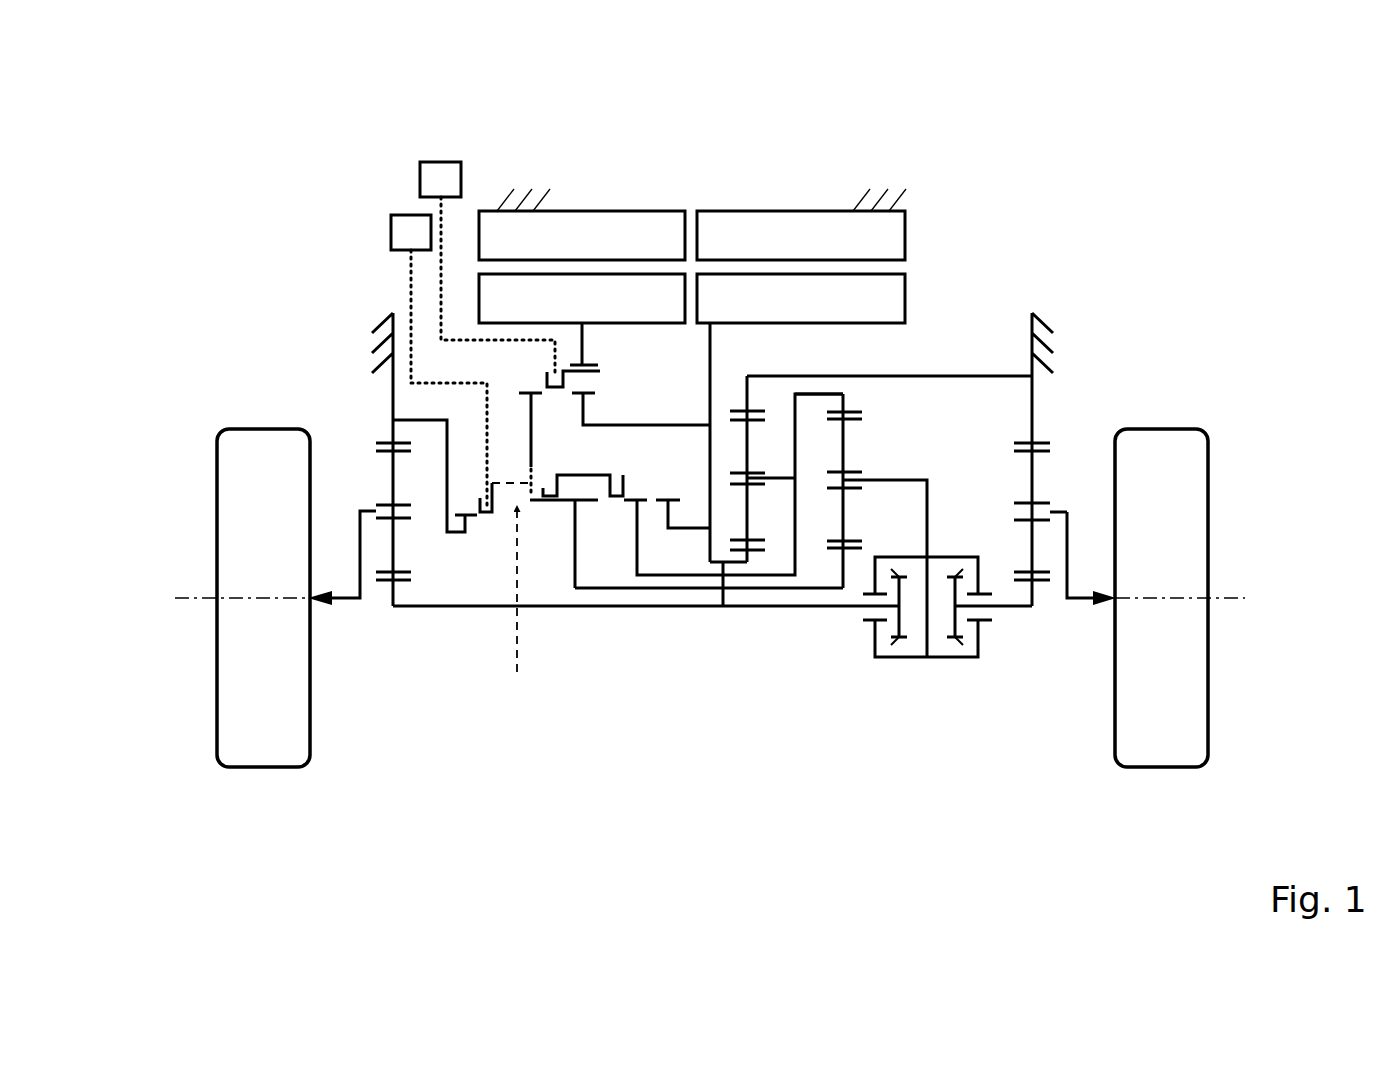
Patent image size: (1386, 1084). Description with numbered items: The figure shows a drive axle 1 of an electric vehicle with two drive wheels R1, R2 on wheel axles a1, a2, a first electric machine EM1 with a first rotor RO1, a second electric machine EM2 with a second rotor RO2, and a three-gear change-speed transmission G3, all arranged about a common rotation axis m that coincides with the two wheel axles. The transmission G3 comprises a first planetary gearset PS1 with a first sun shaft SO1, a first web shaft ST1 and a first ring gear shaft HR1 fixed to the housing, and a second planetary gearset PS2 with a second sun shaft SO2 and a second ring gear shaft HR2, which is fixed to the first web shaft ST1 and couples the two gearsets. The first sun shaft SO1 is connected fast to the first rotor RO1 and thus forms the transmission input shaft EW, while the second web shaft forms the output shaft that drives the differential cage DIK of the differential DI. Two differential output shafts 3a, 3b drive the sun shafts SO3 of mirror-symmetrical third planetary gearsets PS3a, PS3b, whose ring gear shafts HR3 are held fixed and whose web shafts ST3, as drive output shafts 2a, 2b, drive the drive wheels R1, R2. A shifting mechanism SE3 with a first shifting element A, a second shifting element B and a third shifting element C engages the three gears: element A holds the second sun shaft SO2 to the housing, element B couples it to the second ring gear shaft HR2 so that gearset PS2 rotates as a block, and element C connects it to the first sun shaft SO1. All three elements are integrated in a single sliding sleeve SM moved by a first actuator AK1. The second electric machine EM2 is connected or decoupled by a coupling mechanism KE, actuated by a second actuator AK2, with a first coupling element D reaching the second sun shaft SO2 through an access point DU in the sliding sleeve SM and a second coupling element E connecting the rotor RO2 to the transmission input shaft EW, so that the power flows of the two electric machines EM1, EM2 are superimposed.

The drive axle 1 is at (1168, 340).
The second rotor RO2 is at (480, 297).
The first actuator AK1 is at (405, 227).
The second actuator AK2 is at (438, 173).
The second electric machine EM2 is at (490, 200).
The coupling mechanism KE is at (606, 380).
The transmission input shaft EW is at (712, 350).
The first electric machine EM1 is at (837, 200).
The first rotor RO1 is at (888, 300).
The second ring gear shaft HR2 is at (847, 400).
The first ring gear shaft HR1 is at (993, 373).
The ring gear shaft HR3 is at (1033, 418).
The sliding sleeve SM is at (582, 475).
The web shaft ST3 is at (1060, 510).
The drive output shaft 2b is at (343, 596).
The drive output shaft 2a is at (1080, 597).
The rotation axis m is at (1227, 598).
The wheel axle a1 is at (185, 598).
The wheel axle a2 is at (1227, 598).
The sun shaft SO3 is at (1035, 603).
The third planetary gearset PS3b is at (393, 630).
The access point DU is at (517, 608).
The first planetary gearset PS1 is at (858, 471).
The second planetary gearset PS2 is at (899, 471).
The third planetary gearset PS3a is at (1032, 630).
The drive wheel R1 is at (265, 735).
The differential output shaft 3b is at (457, 606).
The shifting mechanism SE3 is at (364, 616).
The first web shaft ST1 is at (669, 606).
The first sun shaft SO1 is at (720, 606).
The three-gear change-speed transmission G3 is at (782, 722).
The second sun shaft SO2 is at (792, 606).
The differential DI is at (927, 711).
The differential cage DIK is at (953, 657).
The differential output shaft 3a is at (1002, 606).
The drive wheel R2 is at (1167, 743).
The first shifting element A is at (461, 490).
The second shifting element B is at (730, 484).
The third shifting element C is at (683, 531).
The first coupling element D is at (536, 445).
The second coupling element E is at (641, 409).